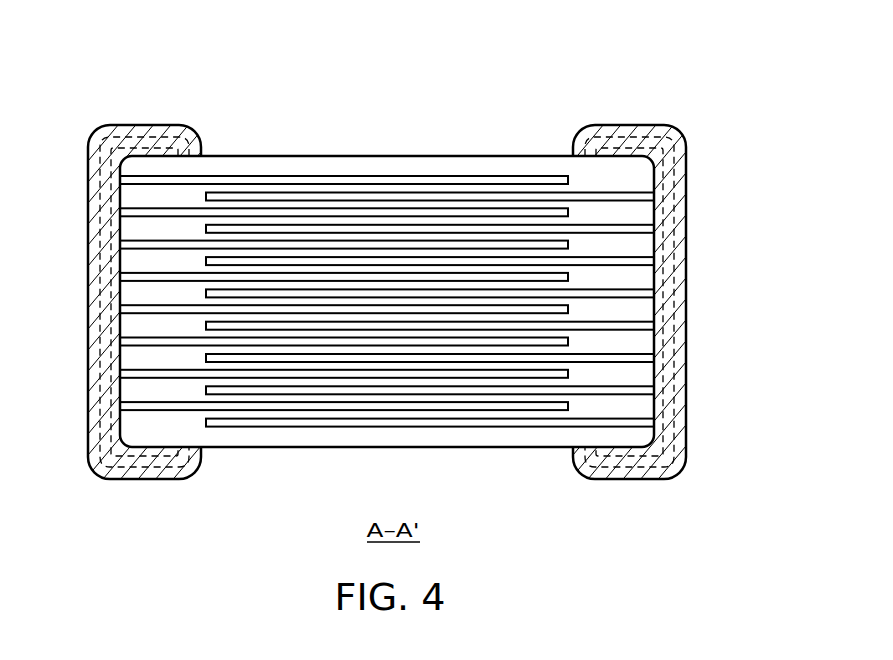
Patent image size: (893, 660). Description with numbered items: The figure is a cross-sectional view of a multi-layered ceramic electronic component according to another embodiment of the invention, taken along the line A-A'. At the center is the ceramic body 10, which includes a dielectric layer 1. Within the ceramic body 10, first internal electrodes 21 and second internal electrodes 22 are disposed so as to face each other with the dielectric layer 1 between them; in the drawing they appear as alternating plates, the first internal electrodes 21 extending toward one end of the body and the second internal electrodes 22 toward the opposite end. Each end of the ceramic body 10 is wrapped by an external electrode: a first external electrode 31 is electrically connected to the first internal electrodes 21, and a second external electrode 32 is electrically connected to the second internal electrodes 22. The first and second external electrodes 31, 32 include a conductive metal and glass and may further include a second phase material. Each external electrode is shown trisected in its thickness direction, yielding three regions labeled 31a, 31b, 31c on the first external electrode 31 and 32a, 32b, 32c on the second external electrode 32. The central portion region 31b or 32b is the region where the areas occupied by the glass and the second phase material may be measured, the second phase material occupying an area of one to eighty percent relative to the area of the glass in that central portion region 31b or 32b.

The dielectric layer 1 is at (633, 278).
The ceramic body 10 is at (391, 156).
The first internal electrode 21 is at (567, 308).
The second internal electrode 22 is at (610, 260).
The first external electrode 31 is at (144, 304).
The first electrode layer of first external electrode 31a is at (119, 269).
The central portion region 31b is at (137, 147).
The plating layer of first external electrode 31c is at (178, 128).
The second external electrode 32 is at (631, 304).
The first electrode layer of second external electrode 32a is at (605, 269).
The central portion region 32b is at (637, 147).
The plating layer of second external electrode 32c is at (658, 140).